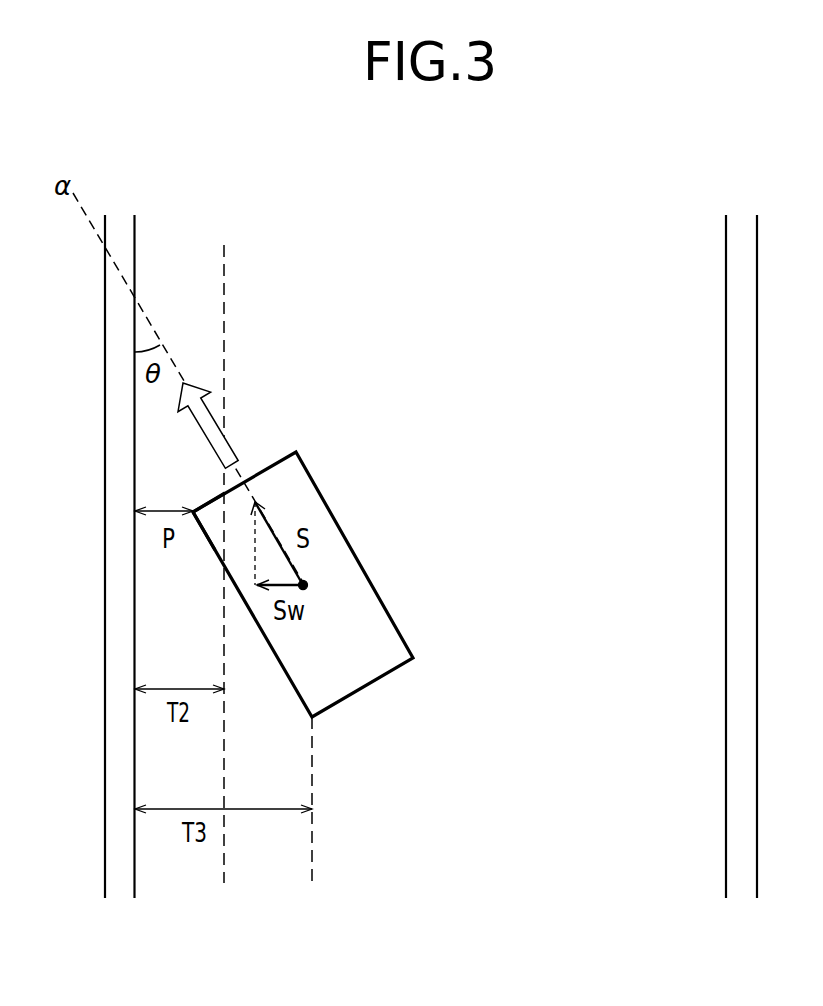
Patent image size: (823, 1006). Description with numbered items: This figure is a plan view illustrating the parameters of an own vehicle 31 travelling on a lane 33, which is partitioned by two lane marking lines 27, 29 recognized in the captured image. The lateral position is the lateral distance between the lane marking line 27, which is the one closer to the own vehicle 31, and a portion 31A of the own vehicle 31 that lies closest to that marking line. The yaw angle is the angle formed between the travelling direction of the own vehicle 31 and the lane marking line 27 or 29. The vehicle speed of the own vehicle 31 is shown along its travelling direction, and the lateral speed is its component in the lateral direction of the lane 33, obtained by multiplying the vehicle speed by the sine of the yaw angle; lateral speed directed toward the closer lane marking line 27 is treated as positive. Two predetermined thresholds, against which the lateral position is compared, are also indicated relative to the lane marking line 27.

The lane marking line 27 is at (121, 230).
The lane marking line 29 is at (742, 230).
The own vehicle 31 is at (356, 545).
The portion of the own vehicle 31A is at (193, 512).
The lane 33 is at (415, 303).